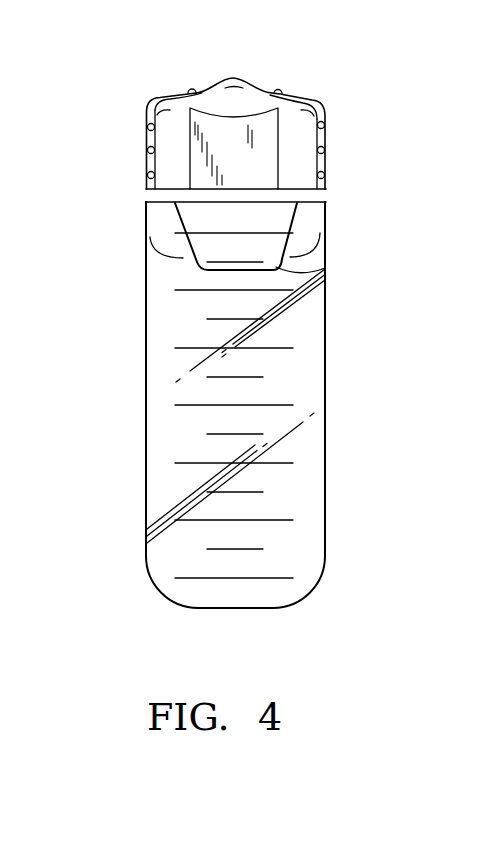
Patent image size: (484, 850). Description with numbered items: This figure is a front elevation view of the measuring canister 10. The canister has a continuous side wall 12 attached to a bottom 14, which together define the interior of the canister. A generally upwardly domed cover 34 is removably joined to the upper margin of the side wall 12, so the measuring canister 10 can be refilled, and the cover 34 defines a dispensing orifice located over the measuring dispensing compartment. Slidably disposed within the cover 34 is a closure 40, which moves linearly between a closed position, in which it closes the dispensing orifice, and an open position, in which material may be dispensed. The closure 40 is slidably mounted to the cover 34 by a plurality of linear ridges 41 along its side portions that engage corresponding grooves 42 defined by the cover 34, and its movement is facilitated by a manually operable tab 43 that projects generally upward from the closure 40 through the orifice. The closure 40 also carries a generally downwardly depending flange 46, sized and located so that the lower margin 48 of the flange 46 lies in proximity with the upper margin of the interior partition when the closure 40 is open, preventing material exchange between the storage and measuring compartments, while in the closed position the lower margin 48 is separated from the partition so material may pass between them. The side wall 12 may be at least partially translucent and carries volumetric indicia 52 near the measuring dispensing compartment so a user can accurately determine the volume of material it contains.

The measuring canister 10 is at (243, 413).
The side wall 12 is at (325, 408).
The bottom 14 is at (248, 610).
The cover 34 is at (238, 112).
The closure 40 is at (168, 113).
The linear ridges 41 is at (323, 141).
The grooves 42 is at (153, 144).
The tab 43 is at (236, 78).
The flange 46 is at (188, 217).
The lower margin 48 is at (318, 267).
The volumetric indicia 52 is at (177, 462).